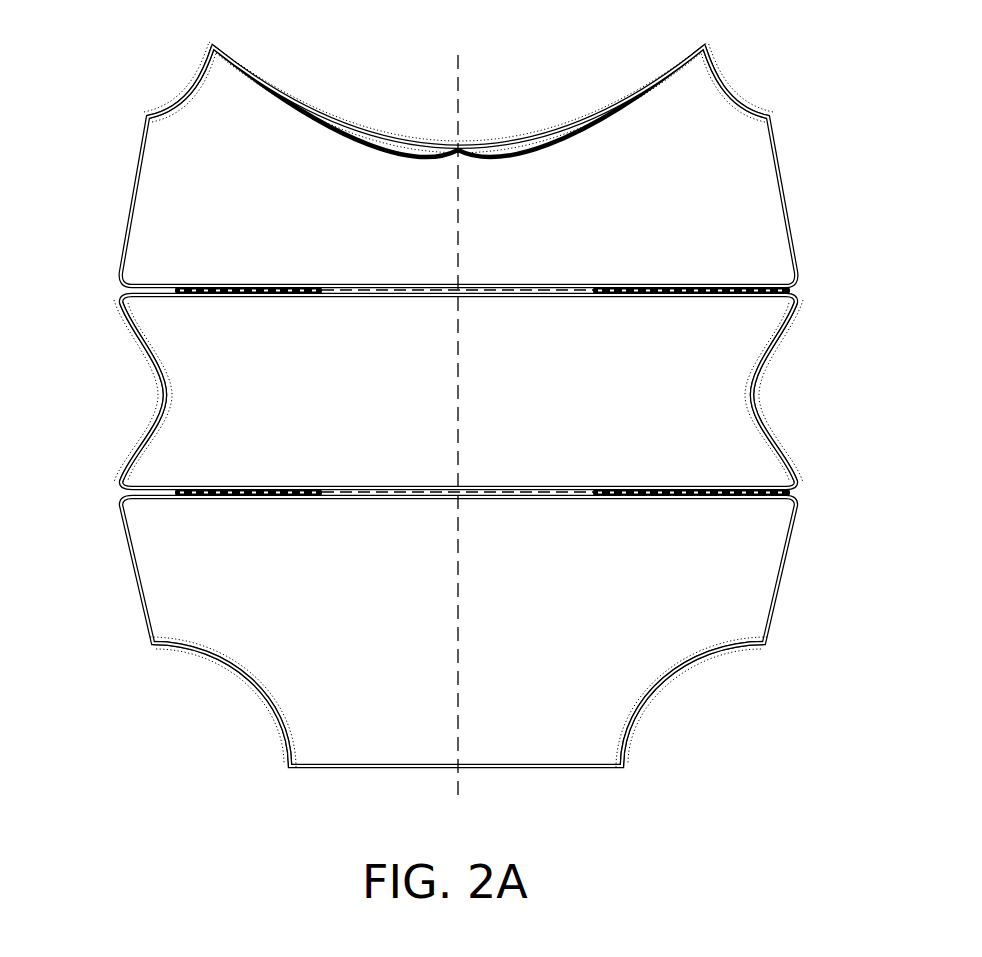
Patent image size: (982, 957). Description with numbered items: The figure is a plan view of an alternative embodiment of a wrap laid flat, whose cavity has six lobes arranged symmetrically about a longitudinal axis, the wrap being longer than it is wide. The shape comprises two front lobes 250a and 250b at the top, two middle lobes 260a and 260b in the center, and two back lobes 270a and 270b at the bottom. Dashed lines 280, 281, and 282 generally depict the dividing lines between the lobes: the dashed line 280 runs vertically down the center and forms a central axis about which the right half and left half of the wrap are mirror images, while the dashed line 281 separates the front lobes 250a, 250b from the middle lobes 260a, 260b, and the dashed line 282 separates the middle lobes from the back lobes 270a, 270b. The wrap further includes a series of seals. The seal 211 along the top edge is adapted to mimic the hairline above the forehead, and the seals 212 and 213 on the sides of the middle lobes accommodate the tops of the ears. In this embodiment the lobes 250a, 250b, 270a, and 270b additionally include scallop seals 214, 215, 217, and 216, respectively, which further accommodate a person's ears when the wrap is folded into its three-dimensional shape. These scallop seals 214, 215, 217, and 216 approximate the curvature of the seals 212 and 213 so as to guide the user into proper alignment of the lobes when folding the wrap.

The seal 211 is at (327, 108).
The seal 212 is at (162, 390).
The seal 213 is at (764, 404).
The scallop seal 214 is at (192, 85).
The scallop seal 215 is at (732, 86).
The scallop seal 216 is at (678, 688).
The scallop seal 217 is at (243, 697).
The front lobe 250a is at (304, 200).
The front lobe 250b is at (684, 200).
The middle lobe 260a is at (304, 404).
The middle lobe 260b is at (684, 404).
The back lobe 270a is at (304, 587).
The back lobe 270b is at (684, 587).
The dashed line 280 is at (458, 200).
The dashed line 281 is at (385, 290).
The dashed line 282 is at (540, 490).